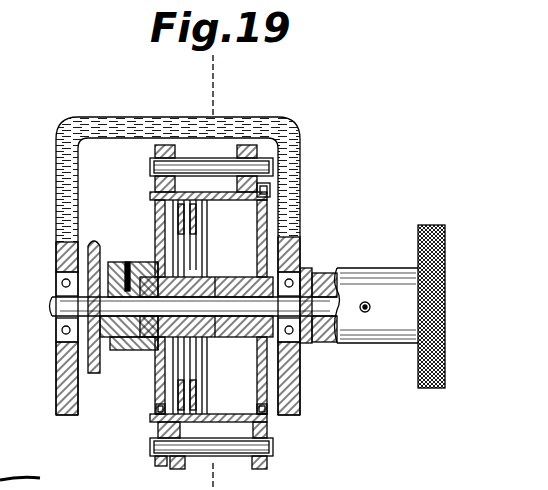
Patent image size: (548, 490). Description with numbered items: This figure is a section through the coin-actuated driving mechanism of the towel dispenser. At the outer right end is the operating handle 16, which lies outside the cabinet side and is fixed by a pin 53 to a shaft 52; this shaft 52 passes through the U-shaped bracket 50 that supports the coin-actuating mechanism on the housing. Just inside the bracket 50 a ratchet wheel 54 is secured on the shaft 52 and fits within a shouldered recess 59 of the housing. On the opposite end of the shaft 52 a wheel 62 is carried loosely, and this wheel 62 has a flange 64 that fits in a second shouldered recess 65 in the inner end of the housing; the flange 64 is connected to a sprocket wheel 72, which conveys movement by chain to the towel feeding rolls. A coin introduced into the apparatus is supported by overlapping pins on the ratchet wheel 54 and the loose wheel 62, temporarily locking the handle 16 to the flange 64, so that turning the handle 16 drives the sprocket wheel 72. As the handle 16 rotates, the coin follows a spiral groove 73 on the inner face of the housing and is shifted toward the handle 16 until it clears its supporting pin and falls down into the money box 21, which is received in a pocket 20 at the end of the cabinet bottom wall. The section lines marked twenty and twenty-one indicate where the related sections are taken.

The operating handle 16 is at (446, 345).
The pocket 20 is at (250, 95).
The money box 21 is at (185, 66).
The U-shaped bracket 50 is at (295, 200).
The shaft 52 is at (314, 300).
The pin 53 is at (366, 313).
The ratchet wheel 54 is at (269, 199).
The shouldered recess 59 is at (268, 408).
The wheel 62 is at (158, 230).
The flange 64 is at (157, 410).
The shouldered recess 65 is at (155, 418).
The sprocket wheel 72 is at (88, 250).
The spiral groove 73 is at (193, 222).